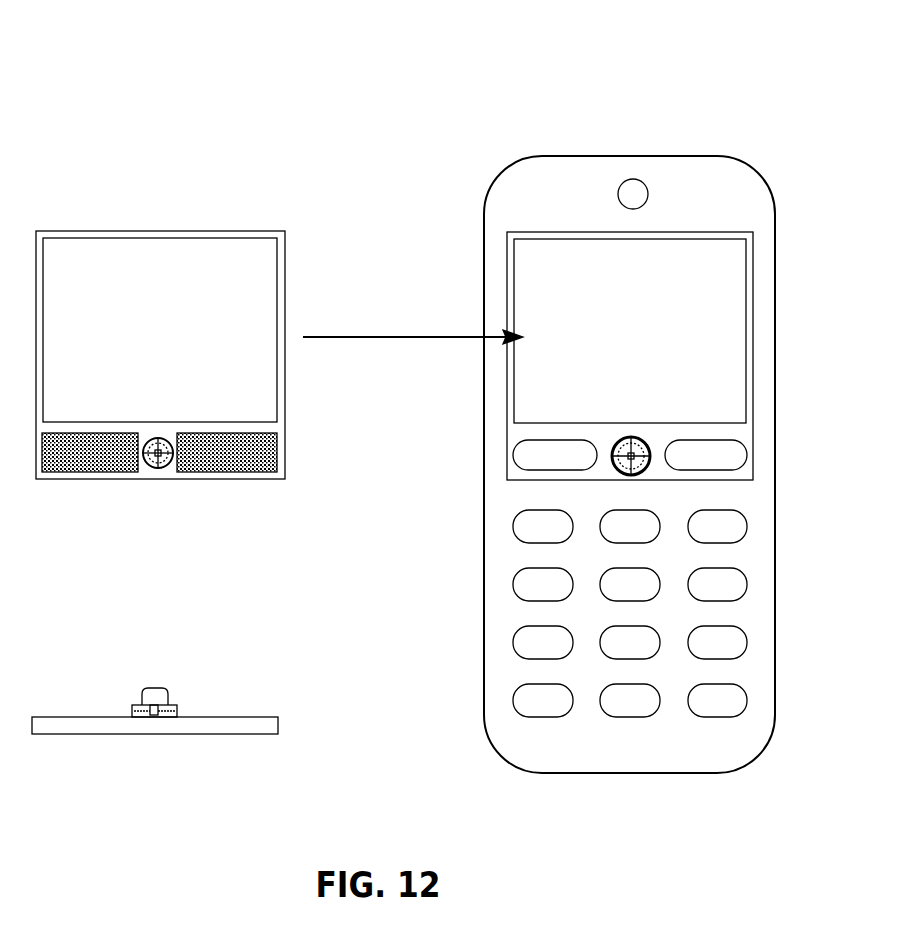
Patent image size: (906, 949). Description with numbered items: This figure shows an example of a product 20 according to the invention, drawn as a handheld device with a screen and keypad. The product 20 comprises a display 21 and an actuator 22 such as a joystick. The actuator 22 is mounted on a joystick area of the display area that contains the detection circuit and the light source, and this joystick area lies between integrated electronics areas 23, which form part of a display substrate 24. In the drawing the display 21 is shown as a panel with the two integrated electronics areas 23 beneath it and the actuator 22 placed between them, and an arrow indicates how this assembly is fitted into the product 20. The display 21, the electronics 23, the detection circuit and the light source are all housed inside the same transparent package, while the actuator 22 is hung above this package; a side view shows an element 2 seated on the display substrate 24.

The product 20 is at (620, 80).
The display 21 is at (155, 246).
The actuator 22 is at (152, 470).
The integrated electronics areas 23 is at (82, 470).
The display substrate 24 is at (247, 720).
The key switch 2 is at (630, 438).